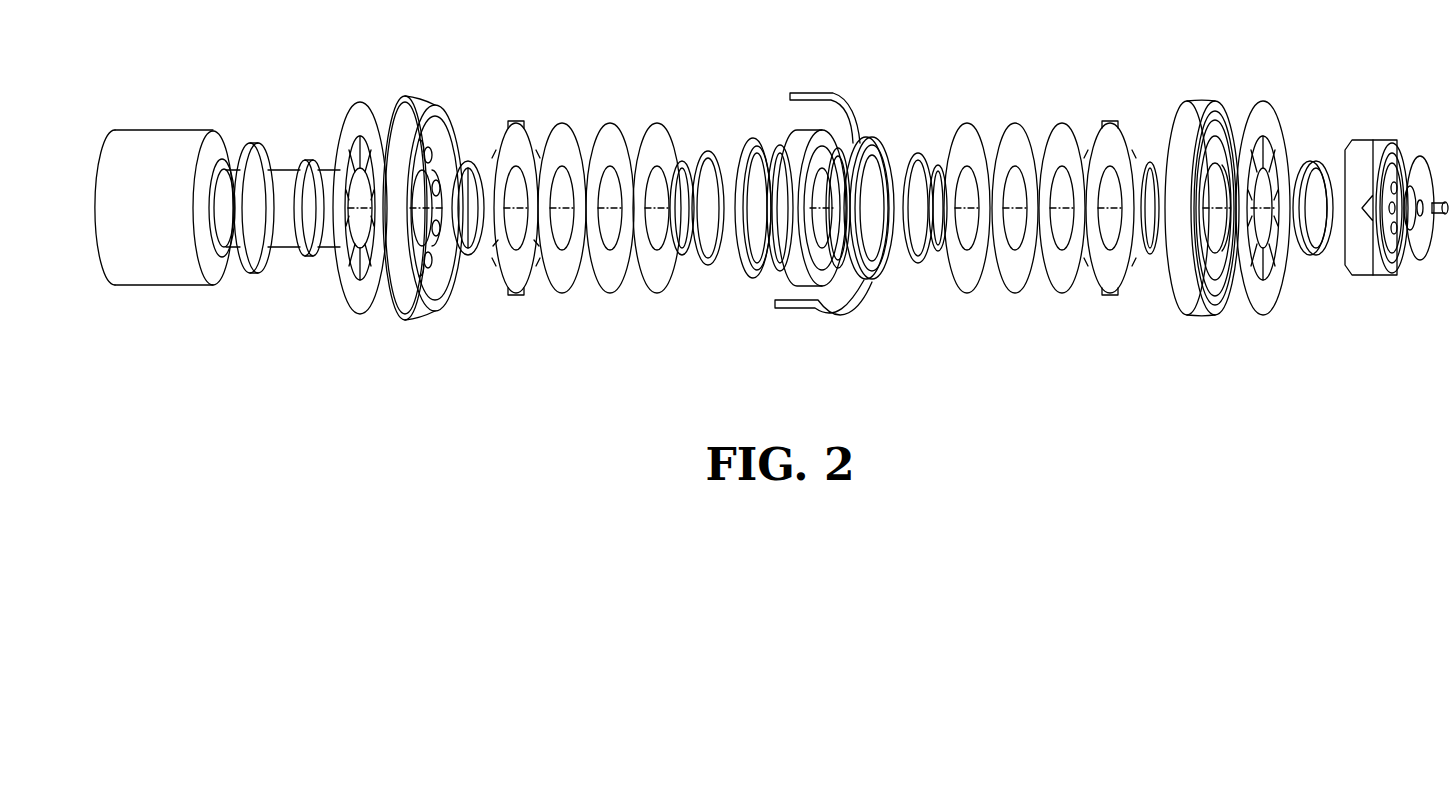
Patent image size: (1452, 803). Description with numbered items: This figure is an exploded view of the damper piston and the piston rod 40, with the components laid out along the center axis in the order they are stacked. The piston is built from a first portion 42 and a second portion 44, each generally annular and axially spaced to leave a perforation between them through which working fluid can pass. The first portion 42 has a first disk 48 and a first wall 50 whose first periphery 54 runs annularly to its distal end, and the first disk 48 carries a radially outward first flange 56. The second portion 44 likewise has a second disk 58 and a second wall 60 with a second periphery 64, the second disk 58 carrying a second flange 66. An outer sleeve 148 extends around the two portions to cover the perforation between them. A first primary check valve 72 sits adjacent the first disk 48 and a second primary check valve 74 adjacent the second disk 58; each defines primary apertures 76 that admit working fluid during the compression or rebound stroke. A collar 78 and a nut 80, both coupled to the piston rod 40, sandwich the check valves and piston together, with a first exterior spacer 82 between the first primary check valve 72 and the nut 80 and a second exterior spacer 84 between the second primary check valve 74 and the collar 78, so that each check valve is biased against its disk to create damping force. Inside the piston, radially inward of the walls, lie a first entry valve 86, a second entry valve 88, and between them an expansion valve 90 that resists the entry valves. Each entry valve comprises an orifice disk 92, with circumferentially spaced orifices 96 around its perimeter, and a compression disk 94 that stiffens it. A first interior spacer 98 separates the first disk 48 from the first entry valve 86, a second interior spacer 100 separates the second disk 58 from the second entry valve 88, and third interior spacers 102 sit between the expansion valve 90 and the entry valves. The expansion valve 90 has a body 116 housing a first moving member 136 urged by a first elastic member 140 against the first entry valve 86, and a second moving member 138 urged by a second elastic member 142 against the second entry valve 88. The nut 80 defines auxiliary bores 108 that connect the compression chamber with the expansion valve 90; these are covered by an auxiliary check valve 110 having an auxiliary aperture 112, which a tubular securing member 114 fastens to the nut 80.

The piston rod 40 is at (165, 287).
The collar 78 is at (262, 271).
The second exterior spacer 84 is at (311, 257).
The second primary check valve 74 is at (360, 315).
The primary apertures 76 is at (352, 150).
The second portion 44 is at (425, 100).
The second flange 66 is at (395, 108).
The second periphery 64 is at (455, 105).
The second disk 58 is at (420, 305).
The second wall 60 is at (432, 311).
The second interior spacer 100 is at (475, 164).
The orifice disk 92 is at (517, 294).
The orifices 96 is at (492, 259).
The compression disk 94 is at (562, 294).
The second entry valve 88 is at (578, 130).
The first entry valve 86 is at (1028, 112).
The third interior spacers 102 is at (683, 162).
The second moving member 138 is at (745, 271).
The second elastic member 142 is at (780, 272).
The body 116 is at (803, 140).
The first moving member 136 is at (845, 280).
The first elastic member 140 is at (852, 140).
The outer sleeve 148 is at (808, 93).
The expansion valve 90 is at (866, 122).
The first interior spacer 98 is at (1150, 256).
The first portion 42 is at (1205, 100).
The first periphery 54 is at (1170, 110).
The first flange 56 is at (1215, 106).
The first disk 48 is at (1215, 300).
The first wall 50 is at (1192, 316).
The first primary check valve 72 is at (1263, 316).
The first exterior spacer 82 is at (1315, 256).
The nut 80 is at (1375, 276).
The auxiliary bores 108 is at (1394, 182).
The auxiliary check valve 110 is at (1414, 262).
The auxiliary aperture 112 is at (1425, 158).
The securing member 114 is at (1440, 216).